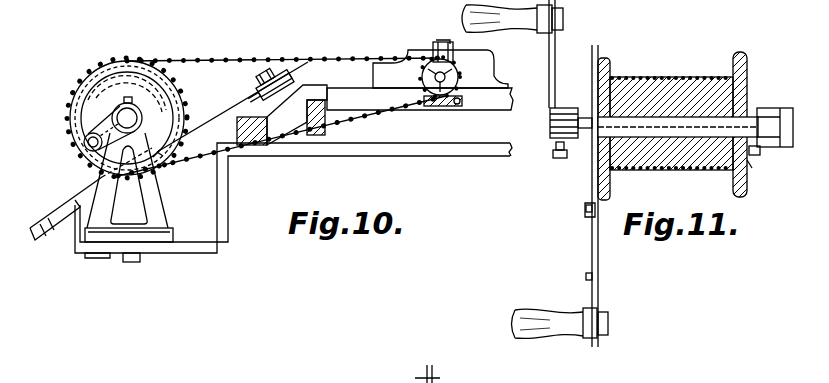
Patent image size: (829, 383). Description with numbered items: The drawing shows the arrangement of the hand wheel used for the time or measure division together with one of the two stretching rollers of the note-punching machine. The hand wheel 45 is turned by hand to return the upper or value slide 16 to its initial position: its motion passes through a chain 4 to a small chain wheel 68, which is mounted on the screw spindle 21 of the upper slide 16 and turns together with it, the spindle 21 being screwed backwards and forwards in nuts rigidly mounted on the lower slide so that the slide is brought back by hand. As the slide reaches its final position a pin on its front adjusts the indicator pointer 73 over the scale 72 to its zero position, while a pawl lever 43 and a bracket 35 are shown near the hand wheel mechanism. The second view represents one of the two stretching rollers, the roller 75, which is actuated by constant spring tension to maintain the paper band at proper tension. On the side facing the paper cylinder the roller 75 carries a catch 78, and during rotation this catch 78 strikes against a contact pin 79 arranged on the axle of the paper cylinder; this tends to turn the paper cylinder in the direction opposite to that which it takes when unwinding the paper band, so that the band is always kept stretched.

In FIG. 10, the chain 4 is at (240, 59).
In FIG. 10, the hand wheel 45 is at (105, 93).
In FIG. 10, the pawl lever 43 is at (232, 113).
In FIG. 10, the indicator pointer 73 is at (92, 186).
In FIG. 10, the scale 72 is at (44, 223).
In FIG. 10, the upper slide 16 is at (352, 102).
In FIG. 10, the screw spindle 21 is at (463, 63).
In FIG. 10, the small chain wheel 68 is at (477, 78).
In FIG. 10, the bracket 35 is at (437, 374).
In FIG. 11, the tension roller 75 is at (668, 54).
In FIG. 11, the contact pin 79 is at (758, 152).
In FIG. 11, the catch 78 is at (748, 182).